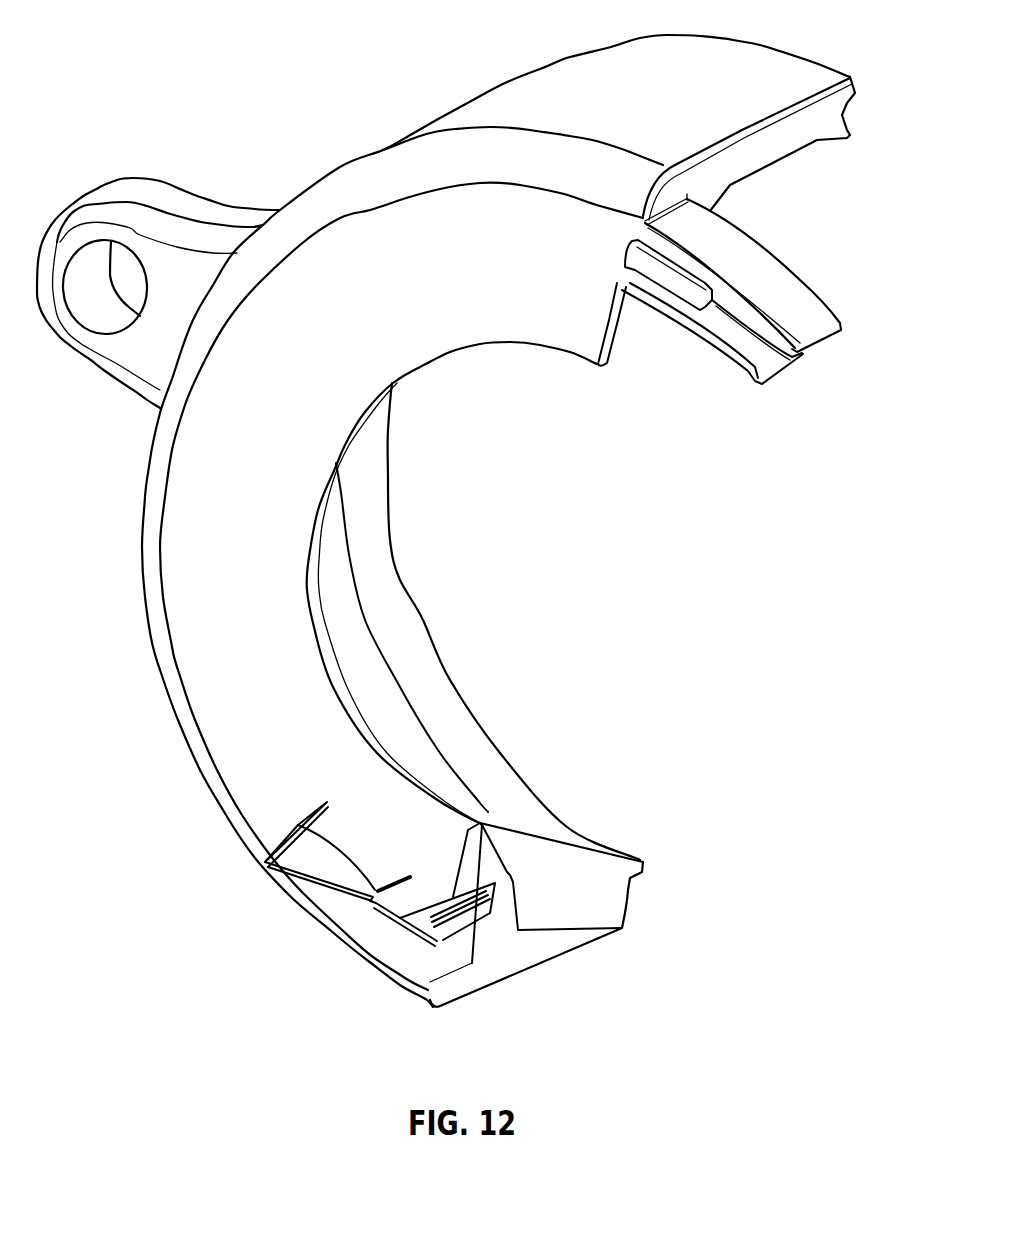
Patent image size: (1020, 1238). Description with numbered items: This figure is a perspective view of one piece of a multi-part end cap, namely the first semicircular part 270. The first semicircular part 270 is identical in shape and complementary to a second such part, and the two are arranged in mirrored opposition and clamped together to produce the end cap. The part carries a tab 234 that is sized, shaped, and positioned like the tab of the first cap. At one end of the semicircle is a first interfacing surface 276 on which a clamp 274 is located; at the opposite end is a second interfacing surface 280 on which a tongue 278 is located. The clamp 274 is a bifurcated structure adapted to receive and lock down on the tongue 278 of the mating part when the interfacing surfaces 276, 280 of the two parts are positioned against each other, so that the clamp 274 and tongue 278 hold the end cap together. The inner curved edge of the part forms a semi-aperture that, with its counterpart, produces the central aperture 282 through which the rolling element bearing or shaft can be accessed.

The tab 234 is at (157, 355).
The first semicircular part 270 is at (262, 784).
The clamp 274 is at (806, 349).
The first interfacing surface 276 is at (750, 157).
The tongue 278 is at (407, 922).
The second interfacing surface 280 is at (550, 933).
The central aperture 282 is at (591, 583).